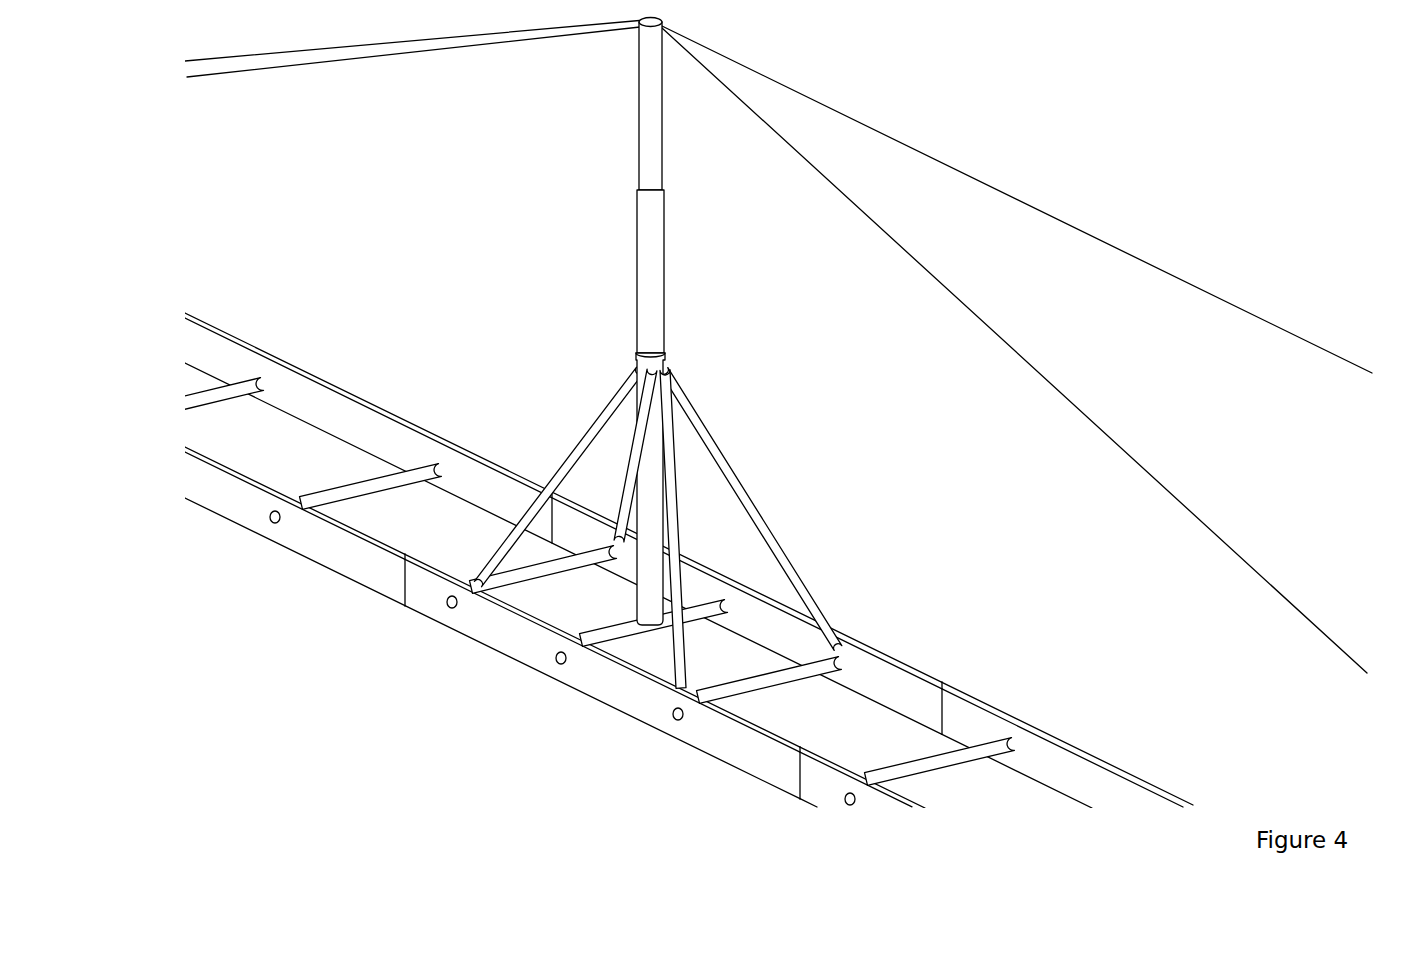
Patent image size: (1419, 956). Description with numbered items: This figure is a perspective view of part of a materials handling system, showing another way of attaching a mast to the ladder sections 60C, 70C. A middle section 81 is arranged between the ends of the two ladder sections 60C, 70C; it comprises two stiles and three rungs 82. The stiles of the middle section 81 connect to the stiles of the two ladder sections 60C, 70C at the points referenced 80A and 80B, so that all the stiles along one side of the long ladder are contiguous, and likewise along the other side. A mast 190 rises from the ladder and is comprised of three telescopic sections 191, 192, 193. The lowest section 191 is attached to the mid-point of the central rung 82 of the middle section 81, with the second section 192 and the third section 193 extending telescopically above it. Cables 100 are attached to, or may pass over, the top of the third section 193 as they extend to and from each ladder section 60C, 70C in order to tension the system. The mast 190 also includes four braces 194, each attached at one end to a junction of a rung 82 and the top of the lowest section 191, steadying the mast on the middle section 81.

The cables 100 is at (370, 56).
The mast 190 is at (671, 361).
The lowest section 191 is at (670, 418).
The second telescopic section 192 is at (640, 258).
The third section 193 is at (640, 122).
The braces 194 is at (598, 407).
The middle section 81 is at (770, 608).
The rungs 82 is at (558, 580).
The ladder section 60C is at (671, 570).
The ladder section 70C is at (1057, 683).
The connection point 80A is at (398, 613).
The connection point 80B is at (788, 797).